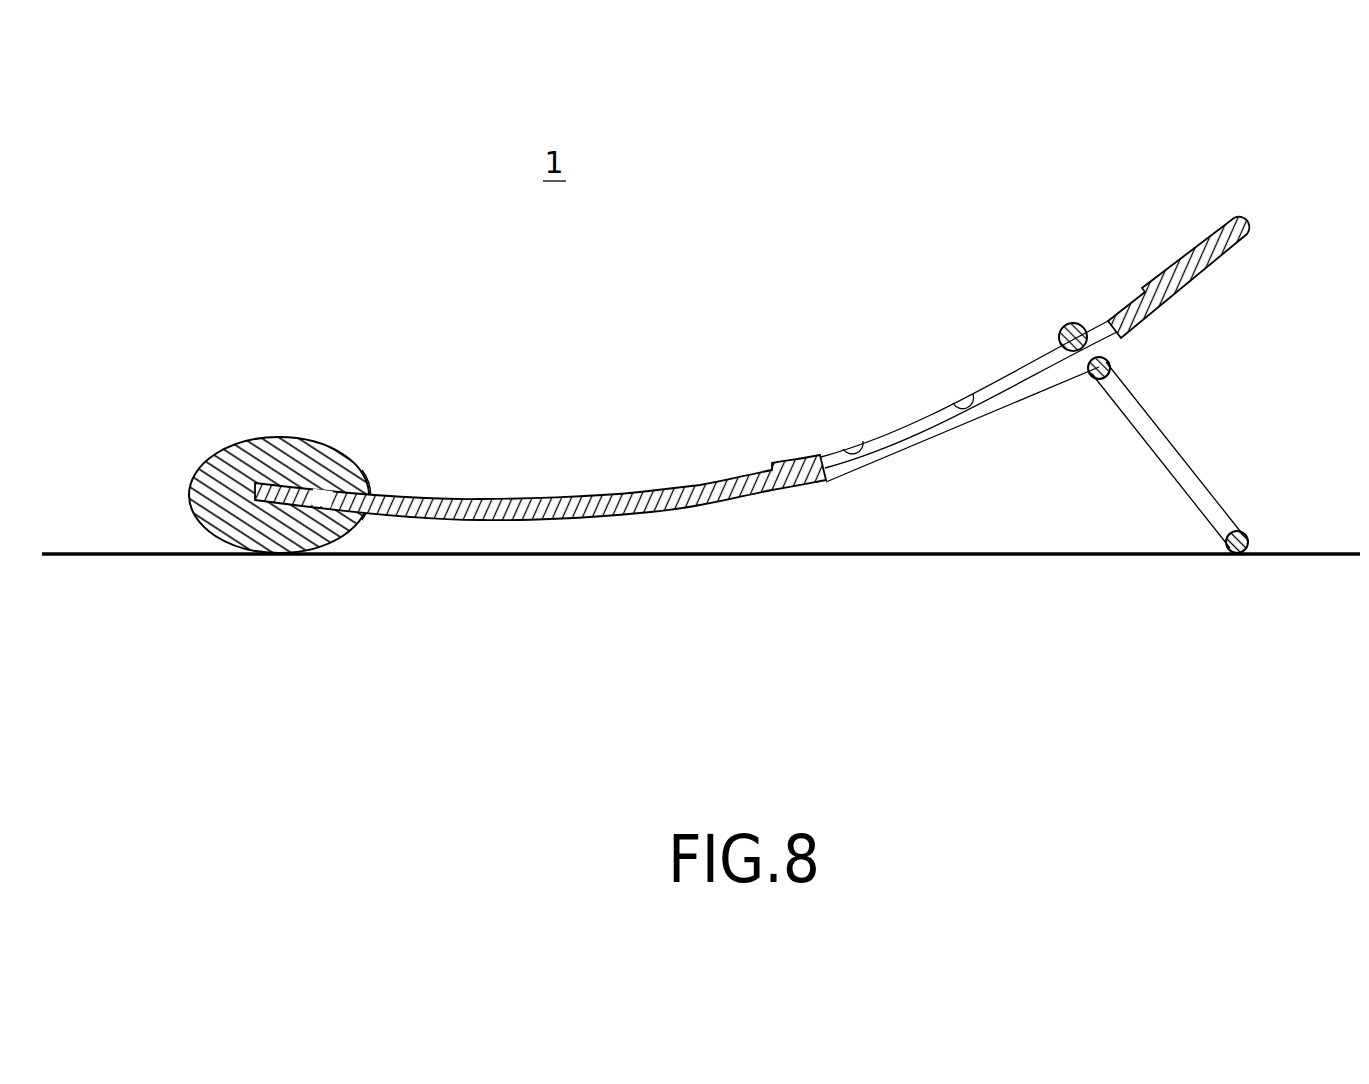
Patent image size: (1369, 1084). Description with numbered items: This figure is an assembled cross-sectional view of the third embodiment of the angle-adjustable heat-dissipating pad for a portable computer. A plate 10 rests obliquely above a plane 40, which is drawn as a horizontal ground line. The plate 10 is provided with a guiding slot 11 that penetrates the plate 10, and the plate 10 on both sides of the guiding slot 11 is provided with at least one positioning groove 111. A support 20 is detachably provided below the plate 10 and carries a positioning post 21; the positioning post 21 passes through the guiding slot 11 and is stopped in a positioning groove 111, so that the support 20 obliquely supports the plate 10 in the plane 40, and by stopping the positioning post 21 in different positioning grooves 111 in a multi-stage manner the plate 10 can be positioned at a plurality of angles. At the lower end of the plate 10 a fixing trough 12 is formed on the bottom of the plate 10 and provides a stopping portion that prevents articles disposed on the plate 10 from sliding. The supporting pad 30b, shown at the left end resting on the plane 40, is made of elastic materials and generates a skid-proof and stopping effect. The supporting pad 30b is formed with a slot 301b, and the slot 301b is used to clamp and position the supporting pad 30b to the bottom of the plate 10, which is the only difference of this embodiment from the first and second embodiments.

The plate 10 is at (597, 497).
The guiding slot 11 is at (1010, 349).
The positioning groove 111 is at (963, 397).
The fixing trough 12 is at (318, 490).
The support 20 is at (1170, 455).
The positioning post 21 is at (1064, 326).
The supporting pad 30b is at (262, 457).
The slot 301b is at (393, 493).
The plane 40 is at (1098, 557).